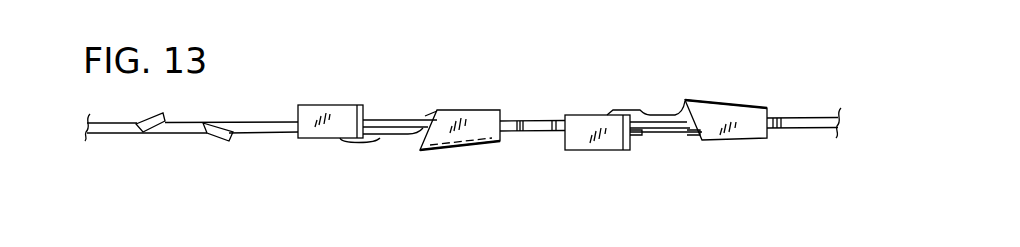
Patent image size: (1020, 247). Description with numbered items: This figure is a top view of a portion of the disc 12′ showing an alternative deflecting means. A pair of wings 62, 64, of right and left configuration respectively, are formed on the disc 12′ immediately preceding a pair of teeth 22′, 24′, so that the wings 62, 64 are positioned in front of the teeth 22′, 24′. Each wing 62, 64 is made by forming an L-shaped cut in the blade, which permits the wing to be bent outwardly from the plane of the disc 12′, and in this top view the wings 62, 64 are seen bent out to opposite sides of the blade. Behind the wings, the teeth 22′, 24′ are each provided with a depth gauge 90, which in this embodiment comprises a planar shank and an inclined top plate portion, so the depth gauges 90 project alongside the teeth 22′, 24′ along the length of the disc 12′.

The disc 12′ is at (262, 125).
The tooth 22′ is at (725, 102).
The tooth 24′ is at (447, 150).
The wing 62 is at (155, 132).
The wing 64 is at (216, 140).
The depth gauge 90 is at (323, 112).